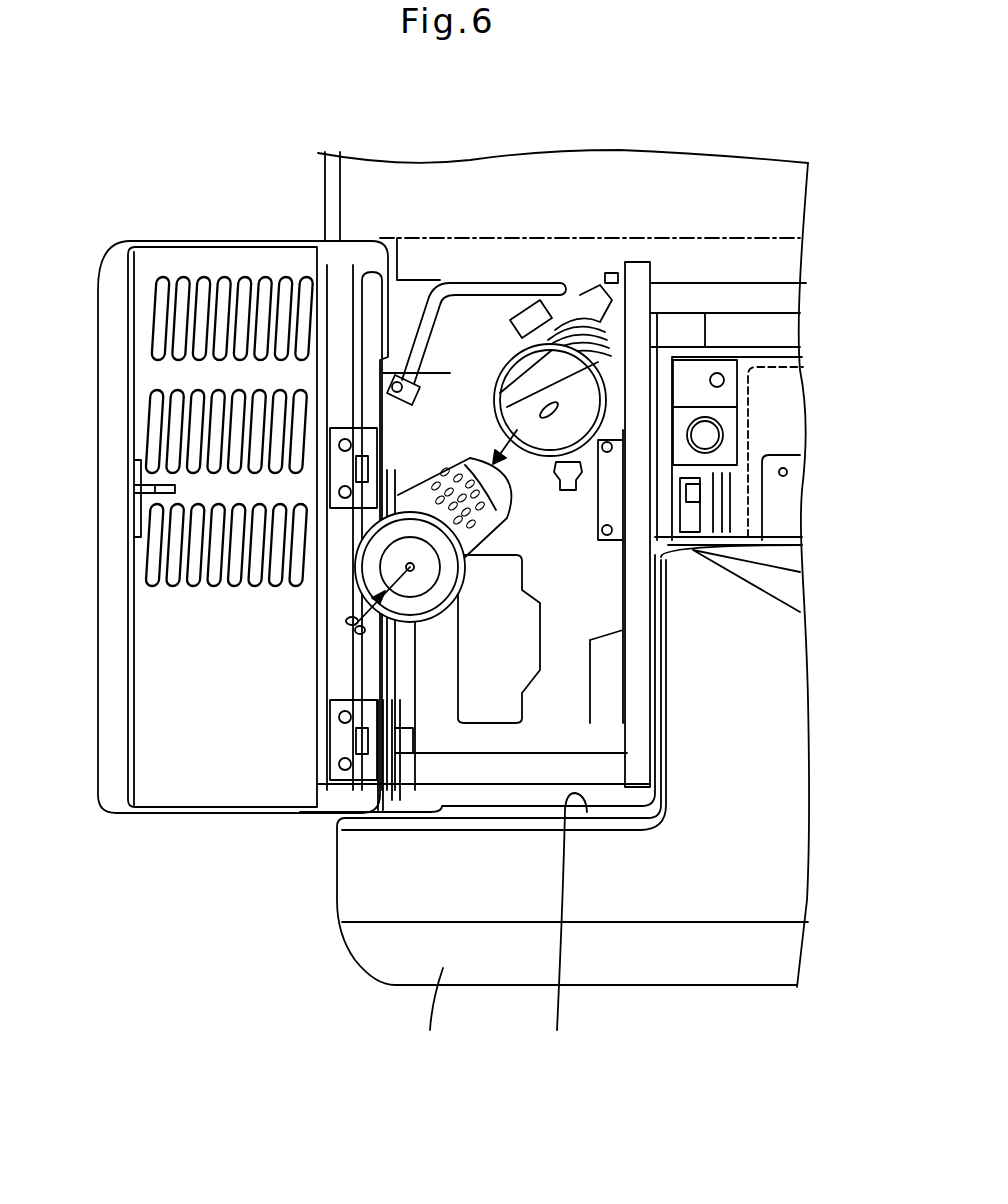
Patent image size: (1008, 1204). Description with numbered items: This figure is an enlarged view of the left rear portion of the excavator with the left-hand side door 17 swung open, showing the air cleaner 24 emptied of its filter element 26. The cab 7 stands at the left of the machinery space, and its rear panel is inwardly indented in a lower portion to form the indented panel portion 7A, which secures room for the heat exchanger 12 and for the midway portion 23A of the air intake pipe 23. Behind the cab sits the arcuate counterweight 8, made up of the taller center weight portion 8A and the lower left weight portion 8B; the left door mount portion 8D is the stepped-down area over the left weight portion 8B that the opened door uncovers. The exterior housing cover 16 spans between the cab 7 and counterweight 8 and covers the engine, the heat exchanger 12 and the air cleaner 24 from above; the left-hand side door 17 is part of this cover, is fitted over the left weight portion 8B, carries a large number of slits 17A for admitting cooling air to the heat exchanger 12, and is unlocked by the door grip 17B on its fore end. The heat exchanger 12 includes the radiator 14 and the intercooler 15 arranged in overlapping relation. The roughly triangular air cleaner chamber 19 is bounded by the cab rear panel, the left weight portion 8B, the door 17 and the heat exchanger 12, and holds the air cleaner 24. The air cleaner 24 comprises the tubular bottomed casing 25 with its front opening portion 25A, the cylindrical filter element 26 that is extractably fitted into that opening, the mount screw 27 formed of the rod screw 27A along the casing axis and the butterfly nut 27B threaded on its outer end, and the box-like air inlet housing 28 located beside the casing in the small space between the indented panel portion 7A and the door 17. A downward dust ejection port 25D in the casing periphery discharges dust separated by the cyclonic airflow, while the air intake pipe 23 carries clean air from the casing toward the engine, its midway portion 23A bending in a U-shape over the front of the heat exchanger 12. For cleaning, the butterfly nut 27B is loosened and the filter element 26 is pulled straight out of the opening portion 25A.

The cab 7 is at (482, 190).
The indented panel portion 7A is at (753, 295).
The counterweight 8 is at (690, 960).
The center weight portion 8A is at (760, 670).
The left weight portion 8B is at (430, 1014).
The left door mount portion 8D is at (562, 927).
The heat exchanger 12 is at (784, 350).
The radiator 14 is at (792, 402).
The intercooler 15 is at (743, 448).
The exterior housing cover 16 is at (753, 237).
The left-hand side door 17 is at (190, 790).
The slits 17A is at (203, 283).
The door grip 17B is at (135, 517).
The air cleaner chamber 19 is at (452, 737).
The air intake pipe 23 is at (673, 330).
The midway portion 23A is at (723, 330).
The air cleaner 24 is at (575, 302).
The casing 25 is at (550, 380).
The opening portion 25A is at (547, 433).
The dust ejection port 25D is at (565, 493).
The filter element 26 is at (478, 548).
The mount screw 27 is at (362, 626).
The rod screw 27A is at (531, 300).
The butterfly nut 27B is at (348, 621).
The air inlet housing 28 is at (457, 330).